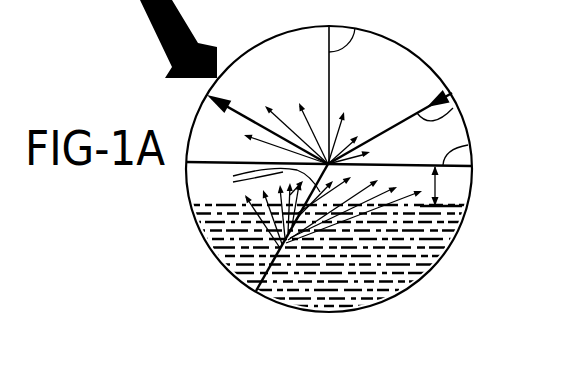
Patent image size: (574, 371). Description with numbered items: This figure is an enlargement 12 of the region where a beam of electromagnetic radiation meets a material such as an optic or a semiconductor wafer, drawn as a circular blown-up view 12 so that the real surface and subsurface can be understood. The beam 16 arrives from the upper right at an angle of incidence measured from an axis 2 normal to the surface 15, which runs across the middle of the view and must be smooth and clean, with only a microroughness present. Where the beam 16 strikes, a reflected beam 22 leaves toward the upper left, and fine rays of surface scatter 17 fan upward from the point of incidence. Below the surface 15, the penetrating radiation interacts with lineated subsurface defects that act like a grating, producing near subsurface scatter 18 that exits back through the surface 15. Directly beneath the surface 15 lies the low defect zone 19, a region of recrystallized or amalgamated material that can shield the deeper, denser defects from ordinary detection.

The normal axis 2 is at (357, 28).
The enlargement 12 is at (468, 130).
The surface 15 is at (469, 143).
The beam 16 is at (455, 108).
The surface scatter 17 is at (350, 116).
The near subsurface scatter 18 is at (266, 181).
The low defect zone 19 is at (437, 183).
The reflected beam 22 is at (243, 113).